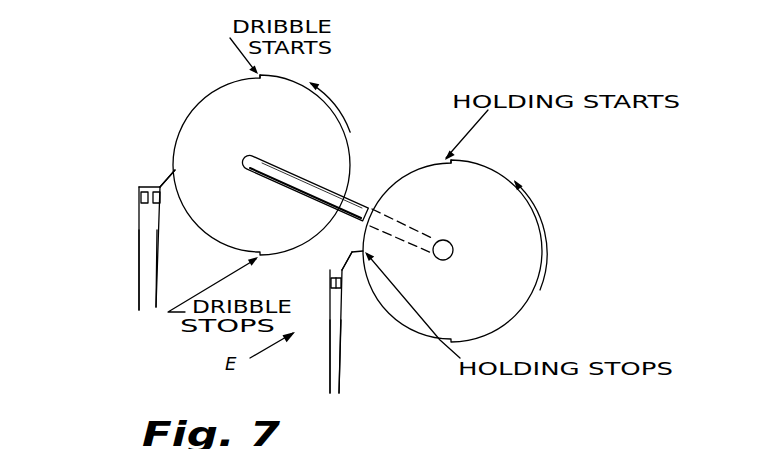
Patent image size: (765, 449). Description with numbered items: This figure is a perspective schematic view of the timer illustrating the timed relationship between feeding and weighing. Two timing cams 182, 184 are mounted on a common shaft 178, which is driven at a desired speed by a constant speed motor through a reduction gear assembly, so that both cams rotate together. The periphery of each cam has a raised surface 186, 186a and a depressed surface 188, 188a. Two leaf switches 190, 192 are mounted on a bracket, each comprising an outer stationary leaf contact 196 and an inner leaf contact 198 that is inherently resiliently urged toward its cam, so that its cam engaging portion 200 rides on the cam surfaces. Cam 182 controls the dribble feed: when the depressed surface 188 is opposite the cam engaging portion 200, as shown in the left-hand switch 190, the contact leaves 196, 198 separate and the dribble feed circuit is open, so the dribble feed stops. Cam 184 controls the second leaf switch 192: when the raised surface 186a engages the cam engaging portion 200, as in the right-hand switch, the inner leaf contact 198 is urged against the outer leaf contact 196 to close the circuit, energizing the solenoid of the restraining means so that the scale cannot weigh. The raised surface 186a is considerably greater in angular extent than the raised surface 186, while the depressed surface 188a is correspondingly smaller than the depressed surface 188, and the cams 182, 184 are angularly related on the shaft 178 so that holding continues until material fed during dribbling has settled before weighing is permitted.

The shaft 178 is at (355, 202).
The timing cam 182 is at (256, 139).
The timing cam 184 is at (459, 219).
The raised surface 186 is at (288, 80).
The raised surface 186a is at (515, 302).
The depressed surface 188 is at (208, 101).
The depressed surface 188a is at (446, 167).
The leaf switch 190 is at (138, 233).
The leaf switch 192 is at (346, 338).
The outer stationary leaf contact 196 is at (138, 270).
The inner leaf contact 198 is at (160, 255).
The cam engaging portion 200 is at (175, 170).